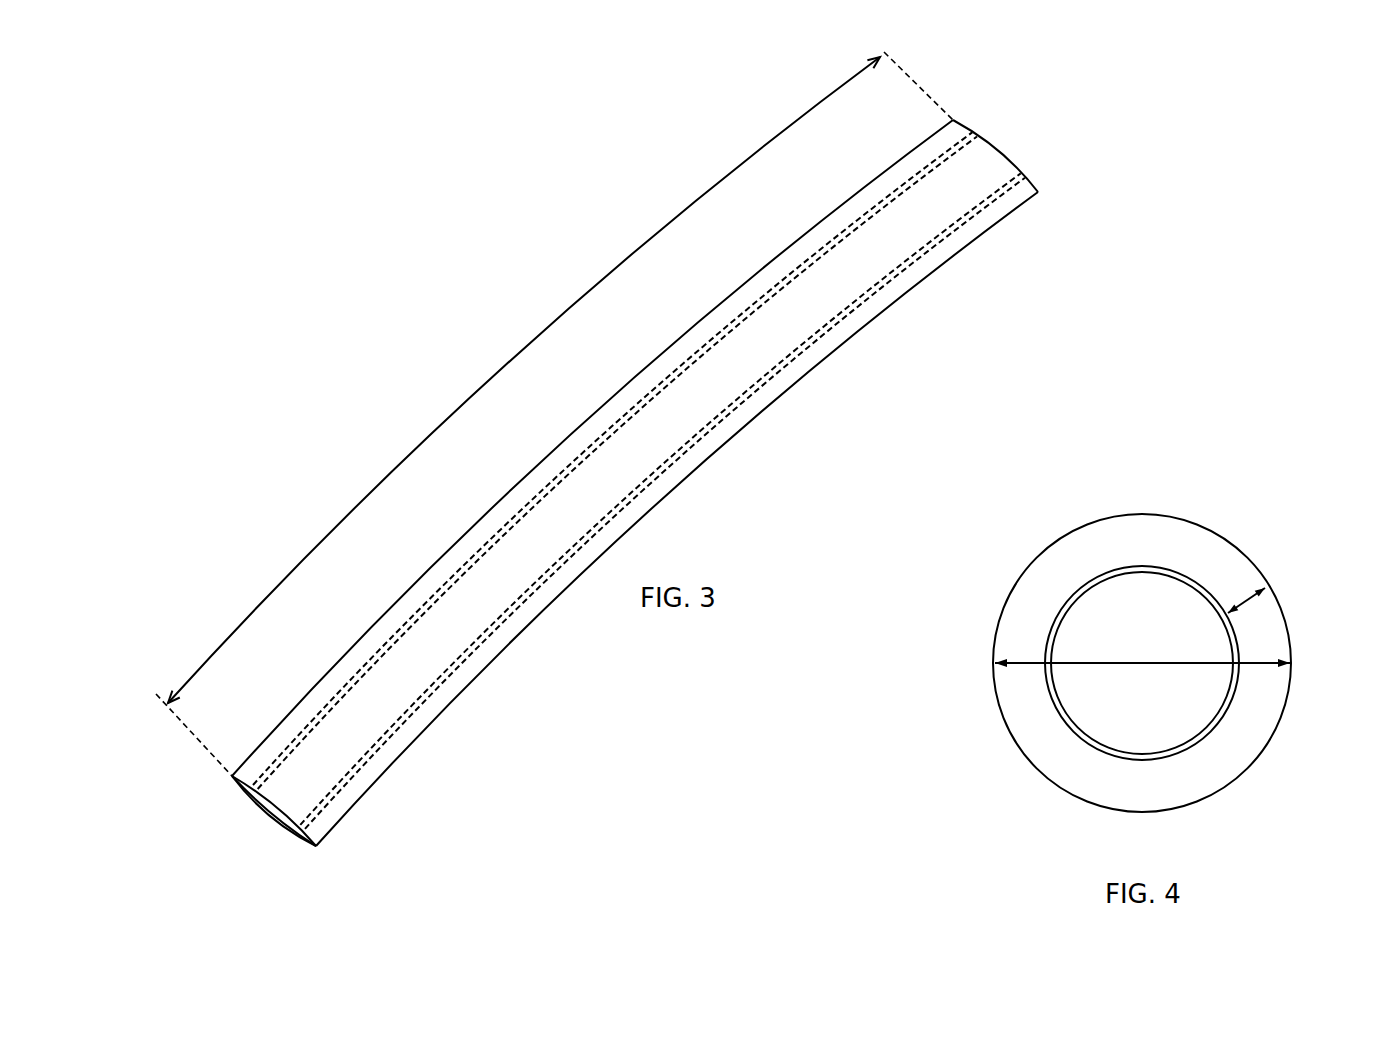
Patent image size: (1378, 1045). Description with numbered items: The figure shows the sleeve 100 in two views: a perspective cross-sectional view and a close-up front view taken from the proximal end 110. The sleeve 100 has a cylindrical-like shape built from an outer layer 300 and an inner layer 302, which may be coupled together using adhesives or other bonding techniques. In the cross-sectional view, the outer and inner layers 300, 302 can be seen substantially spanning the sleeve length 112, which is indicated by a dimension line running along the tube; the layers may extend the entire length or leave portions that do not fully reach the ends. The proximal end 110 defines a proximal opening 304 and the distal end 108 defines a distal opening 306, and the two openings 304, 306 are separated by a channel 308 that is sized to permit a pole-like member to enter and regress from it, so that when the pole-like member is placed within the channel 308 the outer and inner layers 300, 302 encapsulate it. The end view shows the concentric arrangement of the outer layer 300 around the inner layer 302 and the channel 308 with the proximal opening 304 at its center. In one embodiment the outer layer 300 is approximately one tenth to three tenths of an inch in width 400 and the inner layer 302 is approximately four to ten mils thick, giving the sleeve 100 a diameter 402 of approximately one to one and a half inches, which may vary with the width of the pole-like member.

In FIG. 3, the sleeve 100 is at (550, 465).
In FIG. 3, the distal end 108 is at (1041, 190).
In FIG. 3, the proximal end 110 is at (300, 849).
In FIG. 4, the proximal end 110 is at (1022, 772).
In FIG. 3, the sleeve length 112 is at (525, 347).
In FIG. 3, the outer layer 300 is at (292, 718).
In FIG. 4, the outer layer 300 is at (1030, 600).
In FIG. 3, the inner layer 302 is at (335, 702).
In FIG. 4, the inner layer 302 is at (1153, 567).
In FIG. 3, the proximal opening 304 is at (272, 808).
In FIG. 4, the proximal opening 304 is at (1160, 640).
In FIG. 3, the distal opening 306 is at (1005, 153).
In FIG. 3, the channel 308 is at (618, 494).
In FIG. 4, the width 400 is at (1246, 600).
In FIG. 4, the diameter 402 is at (1027, 665).